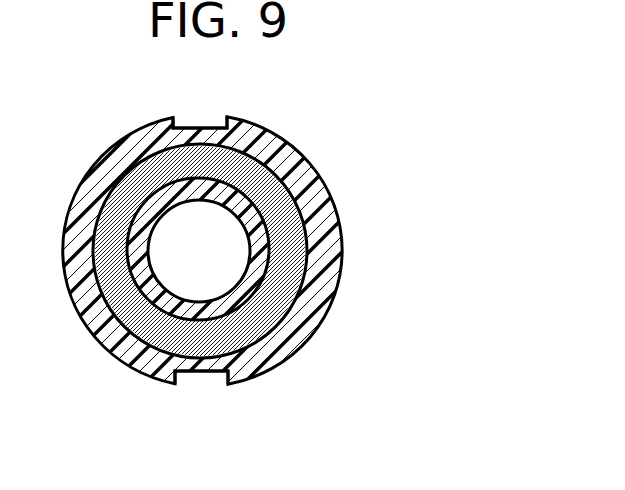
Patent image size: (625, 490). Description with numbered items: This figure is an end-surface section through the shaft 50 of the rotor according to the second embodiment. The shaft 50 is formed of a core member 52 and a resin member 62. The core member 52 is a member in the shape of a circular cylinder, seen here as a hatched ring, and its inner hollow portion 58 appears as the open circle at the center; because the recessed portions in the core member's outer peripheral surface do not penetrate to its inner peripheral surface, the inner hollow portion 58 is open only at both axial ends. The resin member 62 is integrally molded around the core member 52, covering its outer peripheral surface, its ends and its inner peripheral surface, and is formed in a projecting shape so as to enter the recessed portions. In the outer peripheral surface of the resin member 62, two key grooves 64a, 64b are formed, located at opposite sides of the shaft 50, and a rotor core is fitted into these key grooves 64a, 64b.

The shaft 50 is at (354, 134).
The core member 52 is at (155, 147).
The inner hollow portion 58 is at (215, 265).
The resin member 62 is at (245, 140).
The key groove 64a is at (193, 145).
The key groove 64b is at (202, 372).